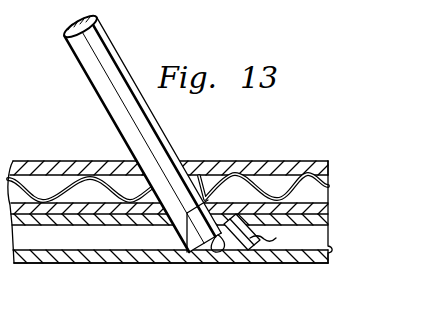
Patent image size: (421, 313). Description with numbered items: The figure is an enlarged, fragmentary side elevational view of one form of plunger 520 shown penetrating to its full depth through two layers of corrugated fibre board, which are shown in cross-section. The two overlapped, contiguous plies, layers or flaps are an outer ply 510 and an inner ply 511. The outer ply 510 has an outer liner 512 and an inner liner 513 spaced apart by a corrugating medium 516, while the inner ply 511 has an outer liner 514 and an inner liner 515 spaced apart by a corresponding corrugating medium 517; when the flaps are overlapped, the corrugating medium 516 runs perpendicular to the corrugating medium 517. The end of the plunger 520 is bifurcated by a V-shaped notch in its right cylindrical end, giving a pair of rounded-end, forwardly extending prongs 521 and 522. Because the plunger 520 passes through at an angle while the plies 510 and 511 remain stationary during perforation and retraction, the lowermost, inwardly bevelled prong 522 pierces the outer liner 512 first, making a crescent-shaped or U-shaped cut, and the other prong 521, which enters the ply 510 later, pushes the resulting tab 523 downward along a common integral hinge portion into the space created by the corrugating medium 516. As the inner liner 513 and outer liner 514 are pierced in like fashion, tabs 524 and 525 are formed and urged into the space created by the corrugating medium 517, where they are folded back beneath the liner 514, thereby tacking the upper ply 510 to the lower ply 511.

The outer ply 510 is at (167, 208).
The inner ply 511 is at (62, 253).
The outer liner 512 is at (107, 162).
The inner liner 513 is at (78, 212).
The outer liner 514 is at (100, 220).
The inner liner 515 is at (104, 254).
The corrugating medium 516 is at (326, 176).
The corrugating medium 517 is at (326, 257).
The plunger 520 is at (119, 58).
The prong 521 is at (212, 253).
The prong 522 is at (188, 253).
The tab 523 is at (203, 176).
The tab 524 is at (245, 251).
The tab 525 is at (262, 240).